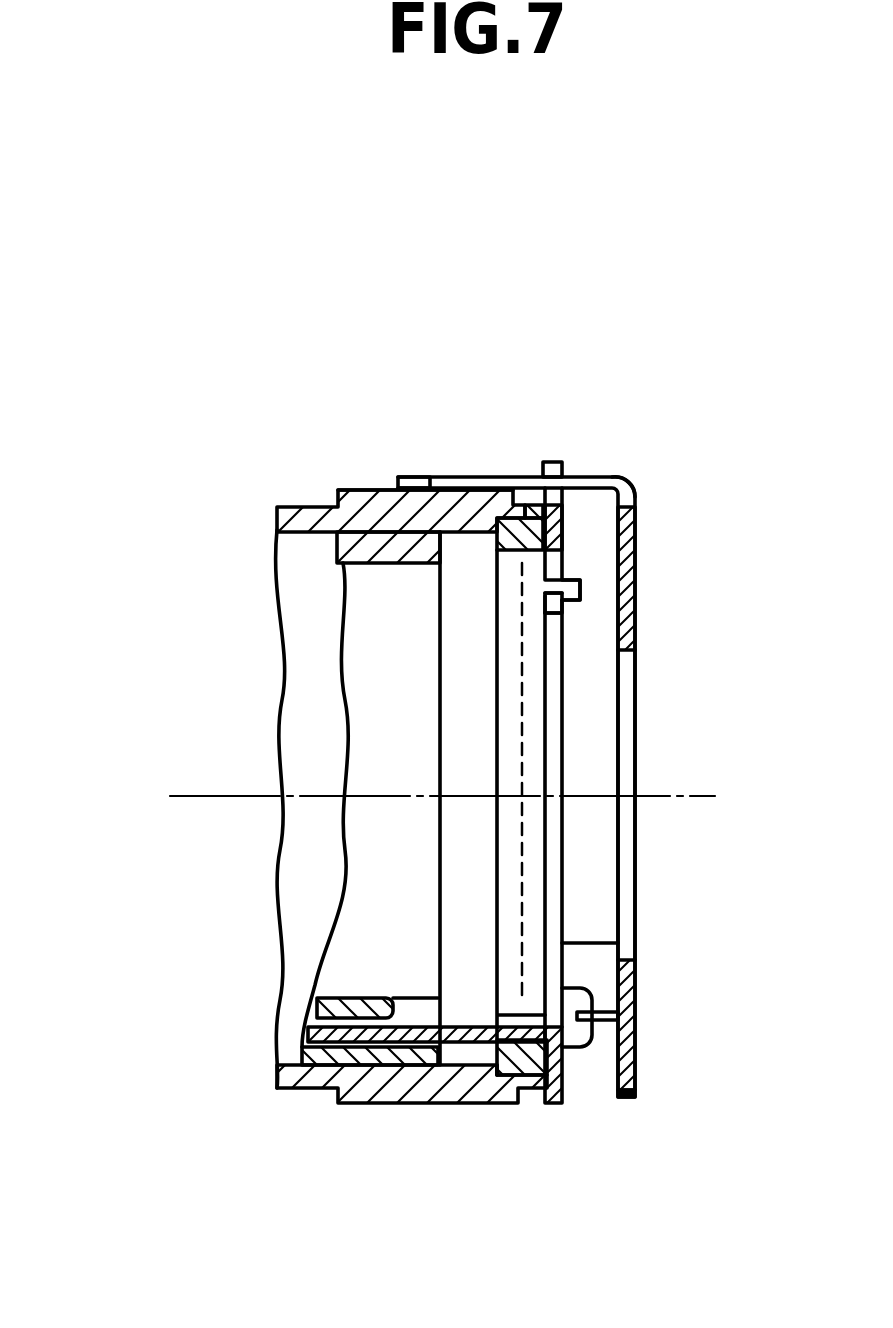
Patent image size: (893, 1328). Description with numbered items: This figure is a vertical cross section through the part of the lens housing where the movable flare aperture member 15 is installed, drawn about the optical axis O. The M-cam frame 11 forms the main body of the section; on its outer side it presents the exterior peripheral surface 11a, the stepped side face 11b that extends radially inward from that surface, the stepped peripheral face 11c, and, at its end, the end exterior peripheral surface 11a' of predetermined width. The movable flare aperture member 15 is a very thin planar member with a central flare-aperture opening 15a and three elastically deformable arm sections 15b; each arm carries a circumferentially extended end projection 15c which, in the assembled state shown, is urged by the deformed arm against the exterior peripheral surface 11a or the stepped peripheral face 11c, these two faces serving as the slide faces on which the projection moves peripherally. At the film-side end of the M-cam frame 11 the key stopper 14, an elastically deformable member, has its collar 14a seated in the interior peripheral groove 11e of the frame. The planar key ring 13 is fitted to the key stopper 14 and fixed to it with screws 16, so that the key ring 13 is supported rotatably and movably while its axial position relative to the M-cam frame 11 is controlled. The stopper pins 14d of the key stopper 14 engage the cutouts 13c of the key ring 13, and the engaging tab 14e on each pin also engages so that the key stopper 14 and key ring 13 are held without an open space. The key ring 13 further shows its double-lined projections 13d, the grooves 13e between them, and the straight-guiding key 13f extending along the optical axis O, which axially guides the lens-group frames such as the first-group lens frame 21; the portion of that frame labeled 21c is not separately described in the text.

The M-cam frame 11 is at (290, 505).
The exterior peripheral surface 11a is at (397, 427).
The end exterior peripheral surface 11a' is at (544, 425).
The stepped side face 11b is at (483, 488).
The stepped peripheral face 11c is at (530, 488).
The interior peripheral groove 11e is at (497, 1070).
The key ring 13 is at (553, 885).
The cutouts 13c is at (546, 596).
The double-lined projections 13d is at (565, 470).
The grooves 13e is at (562, 508).
The straight-guiding key 13f is at (363, 1018).
The key stopper 14 is at (533, 840).
The collar 14a is at (497, 1070).
The stopper pins 14d is at (580, 581).
The engaging tab 14e is at (583, 607).
The movable flare aperture member 15 is at (633, 872).
The opening 15a is at (633, 958).
The arm sections 15b is at (633, 493).
The end projections 15c is at (418, 478).
The screws 16 is at (580, 1048).
The group-1 lens frame 21 is at (345, 562).
The flange of lens frame 21c is at (413, 1050).
The optical axis O is at (196, 793).